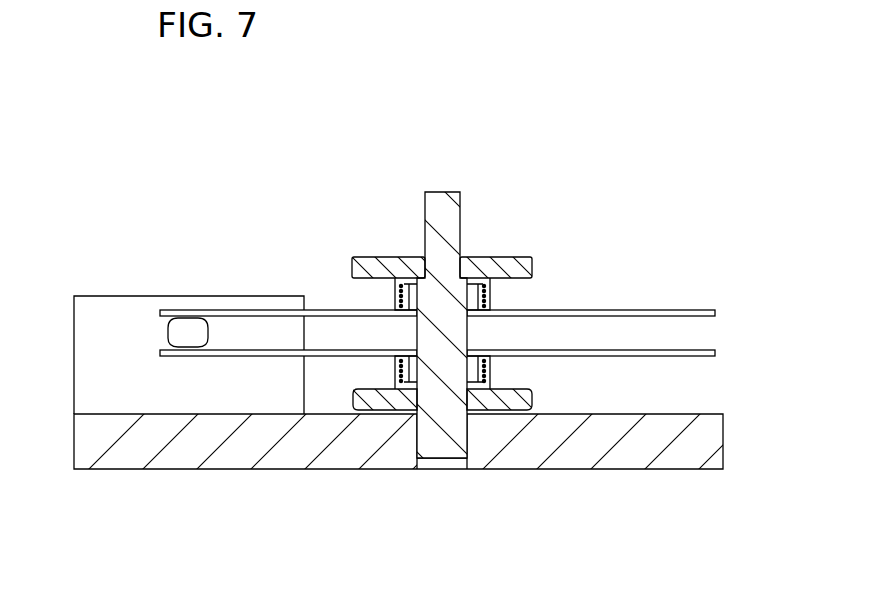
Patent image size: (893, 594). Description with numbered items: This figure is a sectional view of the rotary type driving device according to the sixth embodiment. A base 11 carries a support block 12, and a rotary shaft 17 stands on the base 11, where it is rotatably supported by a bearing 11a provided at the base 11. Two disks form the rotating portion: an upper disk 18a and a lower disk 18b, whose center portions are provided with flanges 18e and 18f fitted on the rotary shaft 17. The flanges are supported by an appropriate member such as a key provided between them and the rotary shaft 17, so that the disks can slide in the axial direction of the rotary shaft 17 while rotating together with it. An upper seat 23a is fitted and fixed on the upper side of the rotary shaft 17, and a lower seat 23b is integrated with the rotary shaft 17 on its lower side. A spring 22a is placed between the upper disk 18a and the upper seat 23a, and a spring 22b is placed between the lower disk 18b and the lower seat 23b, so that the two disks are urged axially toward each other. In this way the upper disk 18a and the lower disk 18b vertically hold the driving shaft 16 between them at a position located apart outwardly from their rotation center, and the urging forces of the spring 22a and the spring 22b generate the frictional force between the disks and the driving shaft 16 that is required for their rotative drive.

The base 11 is at (705, 449).
The bearing 11a is at (417, 437).
The support block 12 is at (110, 360).
The driving shaft 16 is at (168, 331).
The rotary shaft 17 is at (457, 191).
The upper disk 18a is at (705, 306).
The lower disk 18b is at (714, 356).
The flange 18e is at (490, 298).
The flange 18f is at (487, 373).
The spring 22a is at (397, 298).
The spring 22b is at (397, 365).
The upper seat 23a is at (538, 258).
The lower seat 23b is at (508, 397).